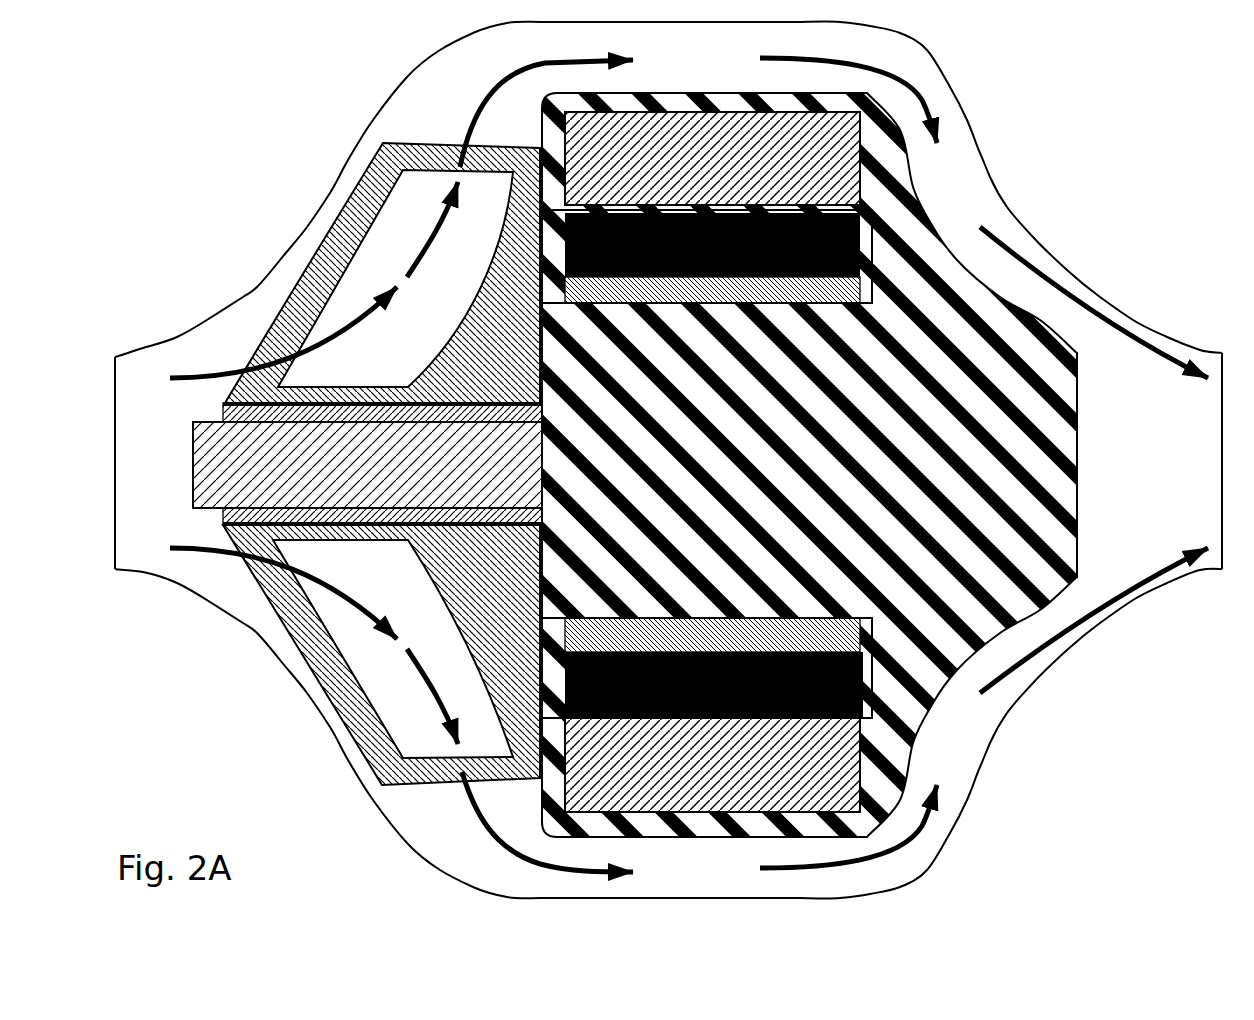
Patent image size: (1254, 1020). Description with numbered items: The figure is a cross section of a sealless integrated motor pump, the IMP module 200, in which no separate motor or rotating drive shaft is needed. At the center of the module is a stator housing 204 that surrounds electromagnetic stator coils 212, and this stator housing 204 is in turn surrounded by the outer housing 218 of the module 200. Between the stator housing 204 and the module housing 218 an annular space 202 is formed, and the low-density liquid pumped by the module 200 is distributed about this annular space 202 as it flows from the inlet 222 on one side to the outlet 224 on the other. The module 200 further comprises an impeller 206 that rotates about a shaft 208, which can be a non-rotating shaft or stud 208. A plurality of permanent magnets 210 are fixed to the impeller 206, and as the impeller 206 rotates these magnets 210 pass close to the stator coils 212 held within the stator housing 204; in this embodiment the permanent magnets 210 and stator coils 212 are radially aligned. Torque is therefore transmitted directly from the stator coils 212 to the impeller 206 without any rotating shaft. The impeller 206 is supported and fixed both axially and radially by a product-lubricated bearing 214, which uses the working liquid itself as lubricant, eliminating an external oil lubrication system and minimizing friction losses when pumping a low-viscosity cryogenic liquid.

The IMP module 200 is at (287, 138).
The annular space 202 is at (679, 78).
The stator housing 204 is at (719, 461).
The impeller 206 is at (456, 376).
The shaft 208 is at (356, 484).
The permanent magnets 210 is at (692, 254).
The stator coils 212 is at (692, 169).
The product-lubricated bearing 214 is at (222, 408).
The housing 218 is at (987, 170).
The inlet 222 is at (124, 481).
The outlet 224 is at (1142, 474).